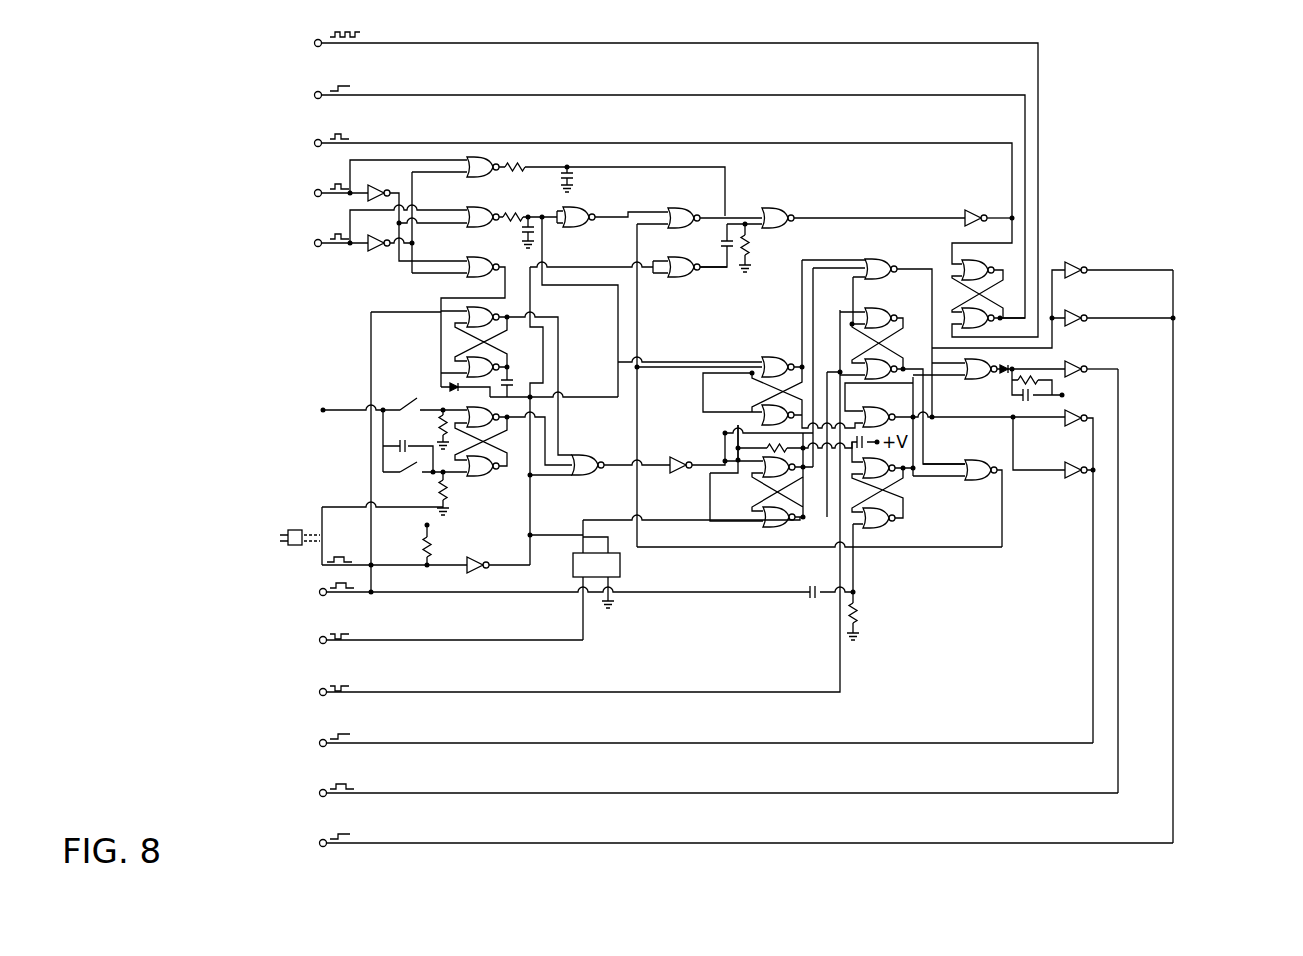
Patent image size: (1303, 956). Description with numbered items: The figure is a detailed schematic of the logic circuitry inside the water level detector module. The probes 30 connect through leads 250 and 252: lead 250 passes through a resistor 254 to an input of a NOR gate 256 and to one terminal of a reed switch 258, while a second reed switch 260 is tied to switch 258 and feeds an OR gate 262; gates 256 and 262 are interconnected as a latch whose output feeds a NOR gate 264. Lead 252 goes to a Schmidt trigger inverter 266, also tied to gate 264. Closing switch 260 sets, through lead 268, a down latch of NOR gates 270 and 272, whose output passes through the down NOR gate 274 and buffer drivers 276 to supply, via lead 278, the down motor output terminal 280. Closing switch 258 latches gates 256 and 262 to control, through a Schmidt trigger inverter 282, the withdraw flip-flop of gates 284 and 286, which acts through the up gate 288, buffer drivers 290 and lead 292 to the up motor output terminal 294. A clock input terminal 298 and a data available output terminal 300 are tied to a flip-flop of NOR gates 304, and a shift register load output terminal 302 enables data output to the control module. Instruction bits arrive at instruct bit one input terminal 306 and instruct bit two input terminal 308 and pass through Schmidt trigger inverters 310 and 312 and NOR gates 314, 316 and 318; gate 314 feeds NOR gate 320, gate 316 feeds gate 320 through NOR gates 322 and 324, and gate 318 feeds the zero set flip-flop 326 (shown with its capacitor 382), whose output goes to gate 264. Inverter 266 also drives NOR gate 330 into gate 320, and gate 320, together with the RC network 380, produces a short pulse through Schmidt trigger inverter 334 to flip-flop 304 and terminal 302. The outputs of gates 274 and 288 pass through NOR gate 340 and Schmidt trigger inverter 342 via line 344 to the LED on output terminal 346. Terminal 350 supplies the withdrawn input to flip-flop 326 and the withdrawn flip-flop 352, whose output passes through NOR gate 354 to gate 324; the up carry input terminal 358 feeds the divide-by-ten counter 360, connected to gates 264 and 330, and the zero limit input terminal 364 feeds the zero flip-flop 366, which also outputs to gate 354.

The clock input terminal 298 is at (318, 39).
The data available output terminal 300 is at (318, 91).
The shift register load output terminal 302 is at (318, 139).
The instruct bit one input terminal 306 is at (318, 189).
The instruct bit two input terminal 308 is at (318, 239).
The Schmidt trigger inverter 310 is at (383, 182).
The Schmidt trigger inverter 312 is at (371, 250).
The NOR gate 314 is at (493, 167).
The NOR gate 316 is at (486, 212).
The NOR gate 318 is at (476, 258).
The NOR gate 322 is at (584, 211).
The NOR gate 324 is at (675, 212).
The NOR gate 320 is at (777, 211).
The RC network 380 is at (760, 258).
The NOR gate 330 is at (690, 280).
The Schmidt trigger inverter 334 is at (961, 208).
The flip-flop 304 is at (1012, 284).
The buffer drivers 276 is at (1082, 306).
The down NOR gate 274 is at (866, 256).
The zero flip-flop 366 is at (905, 300).
The NOR gate 270 is at (786, 341).
The NOR gate 272 is at (753, 412).
The lead 268 is at (584, 396).
The zero set flip-flop 326 is at (442, 334).
The capacitor 382 is at (513, 376).
The second reed switch 260 is at (416, 397).
The OR gate 262 is at (497, 408).
The NOR gate 256 is at (480, 468).
The reed switch 258 is at (415, 464).
The resistor 254 is at (449, 494).
The lead 250 is at (347, 507).
The probes 30 is at (288, 528).
The lead 252 is at (320, 573).
The Schmidt trigger inverter 266 is at (470, 558).
The NOR gate 264 is at (581, 456).
The Schmidt trigger inverter 282 is at (675, 457).
The gate 284 is at (760, 471).
The gate 286 is at (783, 518).
The up gate 288 is at (887, 413).
The NOR gate 340 is at (990, 381).
The Schmidt trigger inverter 342 is at (1077, 359).
The NOR gate 354 is at (979, 458).
The withdrawn flip-flop 352 is at (917, 502).
The buffer drivers 290 is at (1060, 448).
The lead 292 is at (1092, 507).
The line 344 is at (1118, 527).
The lead 278 is at (1176, 549).
The counter 360 is at (622, 565).
The terminal 350 is at (324, 596).
The up carry input terminal 358 is at (324, 644).
The zero limit input terminal 364 is at (324, 696).
The up motor output terminal 294 is at (324, 747).
The LED on output terminal 346 is at (324, 797).
The down motor output terminal 280 is at (324, 847).